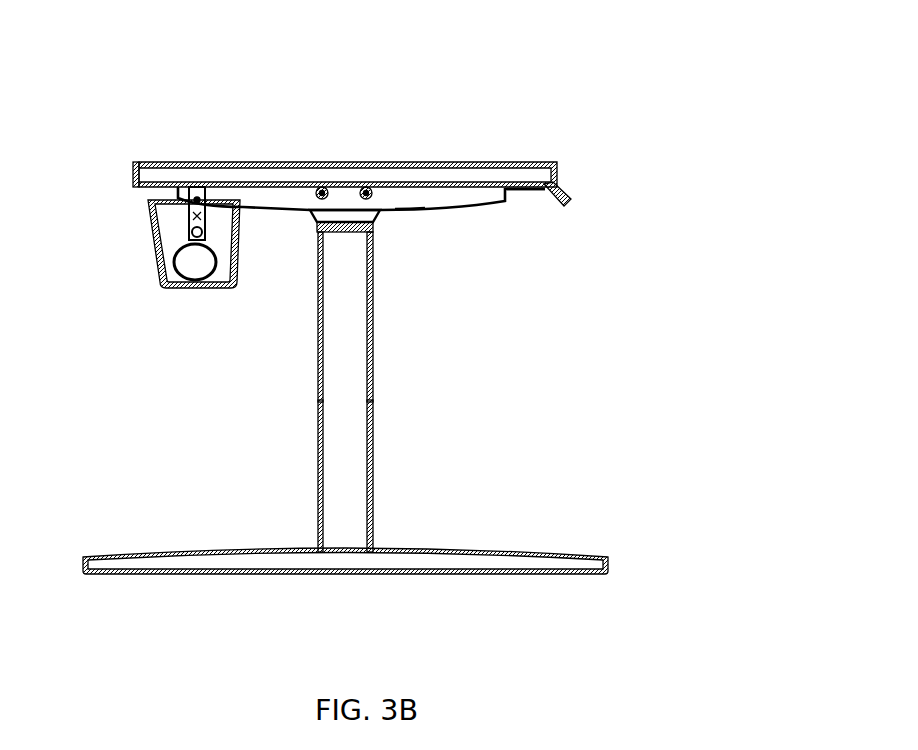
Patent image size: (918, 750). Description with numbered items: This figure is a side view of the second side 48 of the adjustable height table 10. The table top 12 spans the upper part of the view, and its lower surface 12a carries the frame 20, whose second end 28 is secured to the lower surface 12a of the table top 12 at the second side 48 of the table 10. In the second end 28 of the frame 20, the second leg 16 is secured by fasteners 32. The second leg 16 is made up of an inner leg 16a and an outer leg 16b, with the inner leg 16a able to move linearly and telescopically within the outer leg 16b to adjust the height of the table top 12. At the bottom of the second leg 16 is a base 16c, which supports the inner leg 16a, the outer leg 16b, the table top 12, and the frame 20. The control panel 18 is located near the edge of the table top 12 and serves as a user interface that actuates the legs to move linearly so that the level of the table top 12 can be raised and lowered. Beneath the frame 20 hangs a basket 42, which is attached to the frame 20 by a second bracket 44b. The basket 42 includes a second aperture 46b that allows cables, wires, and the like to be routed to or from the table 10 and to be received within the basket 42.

The table 10 is at (560, 108).
The table top 12 is at (252, 162).
The lower surface 12a is at (148, 188).
The second leg 16 is at (385, 414).
The inner leg 16a is at (332, 233).
The outer leg 16b is at (340, 480).
The base 16c is at (203, 557).
The control panel 18 is at (565, 194).
The frame 20 is at (412, 198).
The second end 28 is at (455, 251).
The fasteners 32 is at (366, 189).
The basket 42 is at (173, 247).
The second bracket 44b is at (190, 221).
The second aperture 46b is at (193, 276).
The second side 48 is at (600, 145).